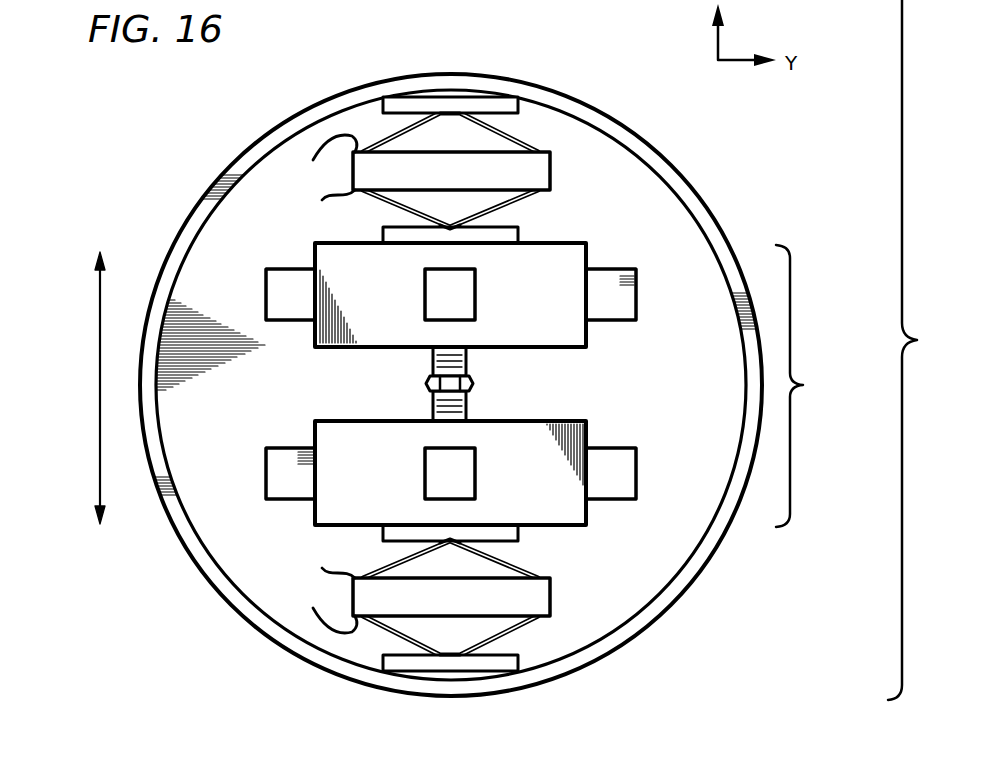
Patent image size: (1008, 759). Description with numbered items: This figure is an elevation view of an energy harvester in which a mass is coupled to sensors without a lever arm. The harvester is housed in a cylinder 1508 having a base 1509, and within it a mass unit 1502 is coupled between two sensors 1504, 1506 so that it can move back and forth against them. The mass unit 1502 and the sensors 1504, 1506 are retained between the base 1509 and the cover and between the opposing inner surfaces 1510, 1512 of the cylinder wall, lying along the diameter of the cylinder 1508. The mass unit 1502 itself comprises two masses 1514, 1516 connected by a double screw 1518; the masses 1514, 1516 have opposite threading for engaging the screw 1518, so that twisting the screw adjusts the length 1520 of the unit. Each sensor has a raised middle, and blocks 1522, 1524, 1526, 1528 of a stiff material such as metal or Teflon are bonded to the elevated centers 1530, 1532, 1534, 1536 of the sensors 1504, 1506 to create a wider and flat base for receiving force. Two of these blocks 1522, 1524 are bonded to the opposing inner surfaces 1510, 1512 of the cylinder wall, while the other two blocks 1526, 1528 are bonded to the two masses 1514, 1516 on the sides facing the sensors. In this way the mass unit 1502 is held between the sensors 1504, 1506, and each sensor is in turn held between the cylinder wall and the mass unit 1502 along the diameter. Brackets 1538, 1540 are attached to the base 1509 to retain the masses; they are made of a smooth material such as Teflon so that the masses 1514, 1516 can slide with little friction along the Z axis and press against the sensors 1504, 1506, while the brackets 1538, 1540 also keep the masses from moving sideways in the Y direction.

The mass unit 1502 is at (825, 380).
The sensor 1504 is at (552, 167).
The sensor 1506 is at (552, 600).
The cylinder 1508 is at (732, 246).
The base 1509 is at (197, 273).
The inner surface 1510 is at (397, 100).
The inner surface 1512 is at (397, 668).
The mass 1514 is at (572, 243).
The mass 1516 is at (570, 527).
The double screw 1518 is at (473, 382).
The length 1520 is at (100, 382).
The block 1522 is at (490, 103).
The block 1524 is at (487, 663).
The block 1526 is at (380, 526).
The block 1528 is at (380, 242).
The elevated center 1530 is at (450, 113).
The elevated center 1532 is at (447, 232).
The elevated center 1534 is at (447, 536).
The elevated center 1536 is at (450, 655).
The bracket 1538 is at (266, 292).
The bracket 1540 is at (266, 468).